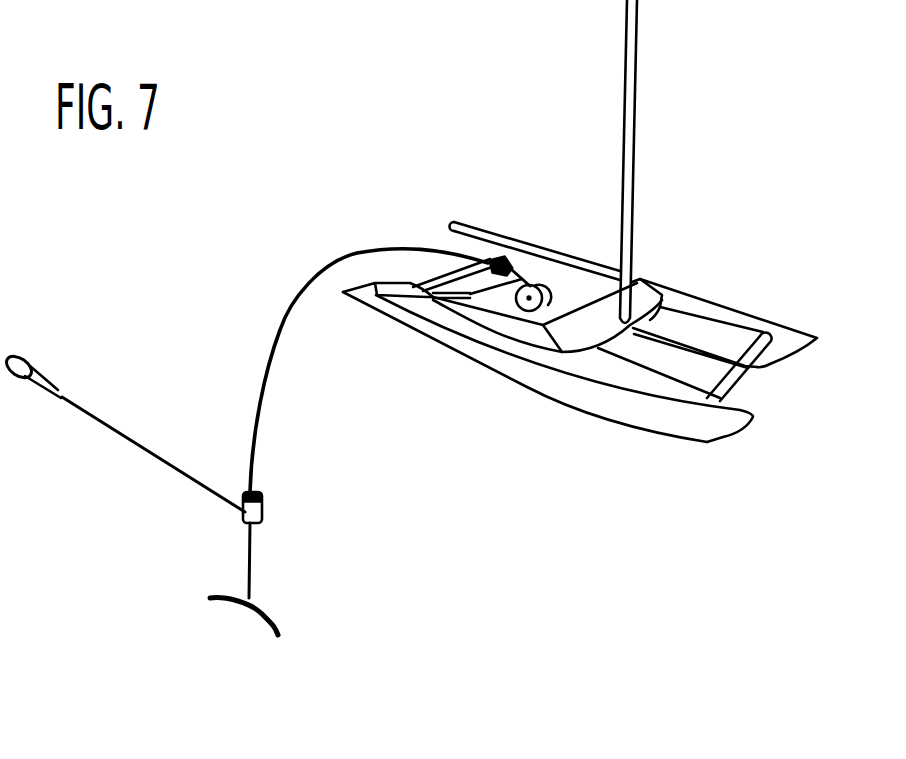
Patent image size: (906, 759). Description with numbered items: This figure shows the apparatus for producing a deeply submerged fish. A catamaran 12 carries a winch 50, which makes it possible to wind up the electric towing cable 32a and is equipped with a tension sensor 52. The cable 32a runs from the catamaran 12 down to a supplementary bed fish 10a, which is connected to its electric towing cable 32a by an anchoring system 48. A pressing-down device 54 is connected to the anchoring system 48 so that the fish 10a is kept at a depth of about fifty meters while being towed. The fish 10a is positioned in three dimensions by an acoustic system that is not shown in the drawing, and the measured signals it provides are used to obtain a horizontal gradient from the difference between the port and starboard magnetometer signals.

The catamaran 12 is at (518, 400).
The tension sensor 52 is at (497, 250).
The winch 50 is at (548, 298).
The electric towing cable 32a is at (293, 297).
The supplementary bed fish 10a is at (15, 374).
The anchoring system 48 is at (263, 513).
The pressing-down device 54 is at (278, 615).